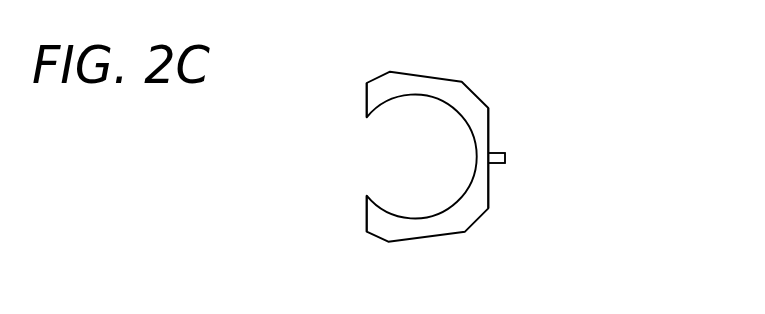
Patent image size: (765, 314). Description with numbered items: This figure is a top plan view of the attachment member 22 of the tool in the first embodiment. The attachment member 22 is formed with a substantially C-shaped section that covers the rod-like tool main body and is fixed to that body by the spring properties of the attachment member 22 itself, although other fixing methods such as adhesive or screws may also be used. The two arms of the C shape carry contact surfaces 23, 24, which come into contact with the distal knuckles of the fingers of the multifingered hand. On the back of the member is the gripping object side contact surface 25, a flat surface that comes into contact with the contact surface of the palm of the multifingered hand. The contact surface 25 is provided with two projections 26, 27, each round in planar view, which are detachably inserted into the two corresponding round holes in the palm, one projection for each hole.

The attachment member 22 is at (472, 103).
The contact surface 23 is at (367, 216).
The contact surface 24 is at (367, 103).
The gripping object side contact surface 25 is at (488, 194).
The projection 26 is at (505, 157).
The projection 27 is at (496, 158).